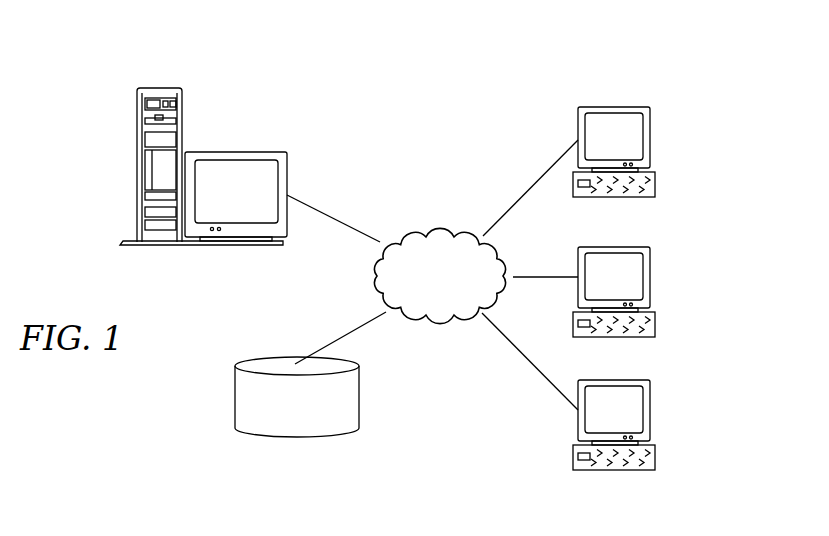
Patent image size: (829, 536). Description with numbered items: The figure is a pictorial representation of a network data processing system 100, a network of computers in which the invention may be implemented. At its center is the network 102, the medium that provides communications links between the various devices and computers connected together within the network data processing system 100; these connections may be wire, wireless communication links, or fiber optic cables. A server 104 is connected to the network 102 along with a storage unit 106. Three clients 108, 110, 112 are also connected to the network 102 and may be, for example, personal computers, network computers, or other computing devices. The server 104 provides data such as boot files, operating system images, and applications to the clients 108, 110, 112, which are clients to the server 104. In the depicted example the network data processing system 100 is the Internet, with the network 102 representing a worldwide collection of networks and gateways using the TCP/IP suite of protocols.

The network data processing system 100 is at (490, 117).
The network 102 is at (408, 231).
The server 104 is at (137, 168).
The storage unit 106 is at (235, 398).
The client 108 is at (650, 135).
The client 110 is at (650, 275).
The client 112 is at (650, 410).